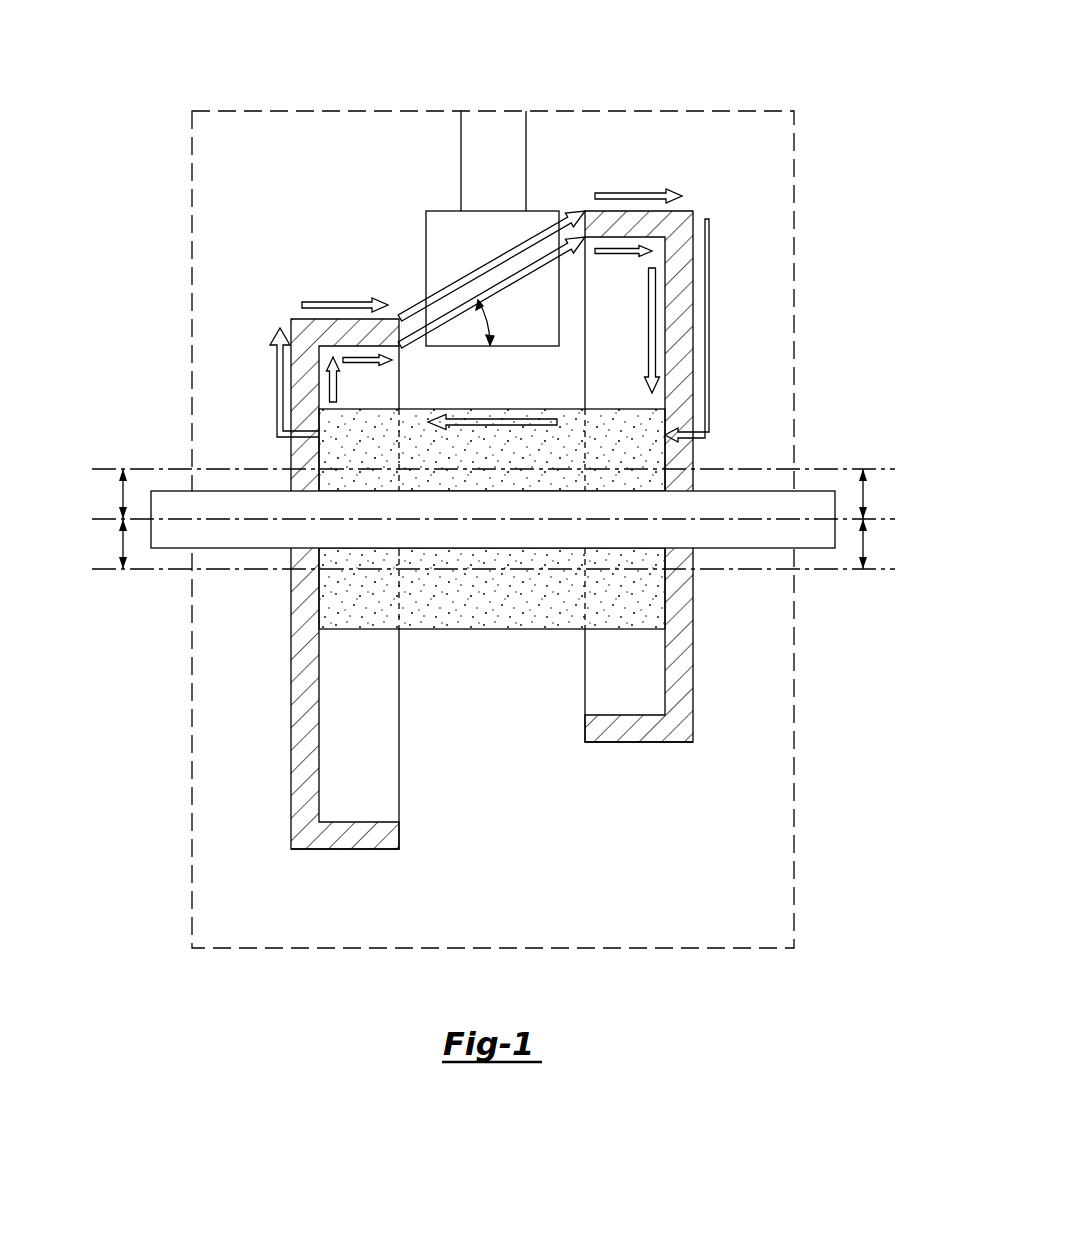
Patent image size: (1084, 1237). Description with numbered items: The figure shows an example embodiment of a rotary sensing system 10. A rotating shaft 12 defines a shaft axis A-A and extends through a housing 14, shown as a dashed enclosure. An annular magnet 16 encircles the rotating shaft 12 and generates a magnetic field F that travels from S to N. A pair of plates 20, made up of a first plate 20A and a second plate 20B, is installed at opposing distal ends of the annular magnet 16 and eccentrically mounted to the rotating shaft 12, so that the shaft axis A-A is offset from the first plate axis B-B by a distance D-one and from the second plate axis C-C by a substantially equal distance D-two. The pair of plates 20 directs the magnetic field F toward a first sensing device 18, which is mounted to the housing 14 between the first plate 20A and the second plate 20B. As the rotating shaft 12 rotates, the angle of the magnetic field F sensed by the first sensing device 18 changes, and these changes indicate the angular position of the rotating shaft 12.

The rotary sensing system 10 is at (605, 62).
The rotating shaft 12 is at (742, 491).
The housing 14 is at (794, 137).
The annular magnet 16 is at (485, 630).
The first sensing device 18 is at (426, 255).
The pair of plates 20 is at (322, 850).
The first plate 20A is at (291, 797).
The second plate 20B is at (693, 270).